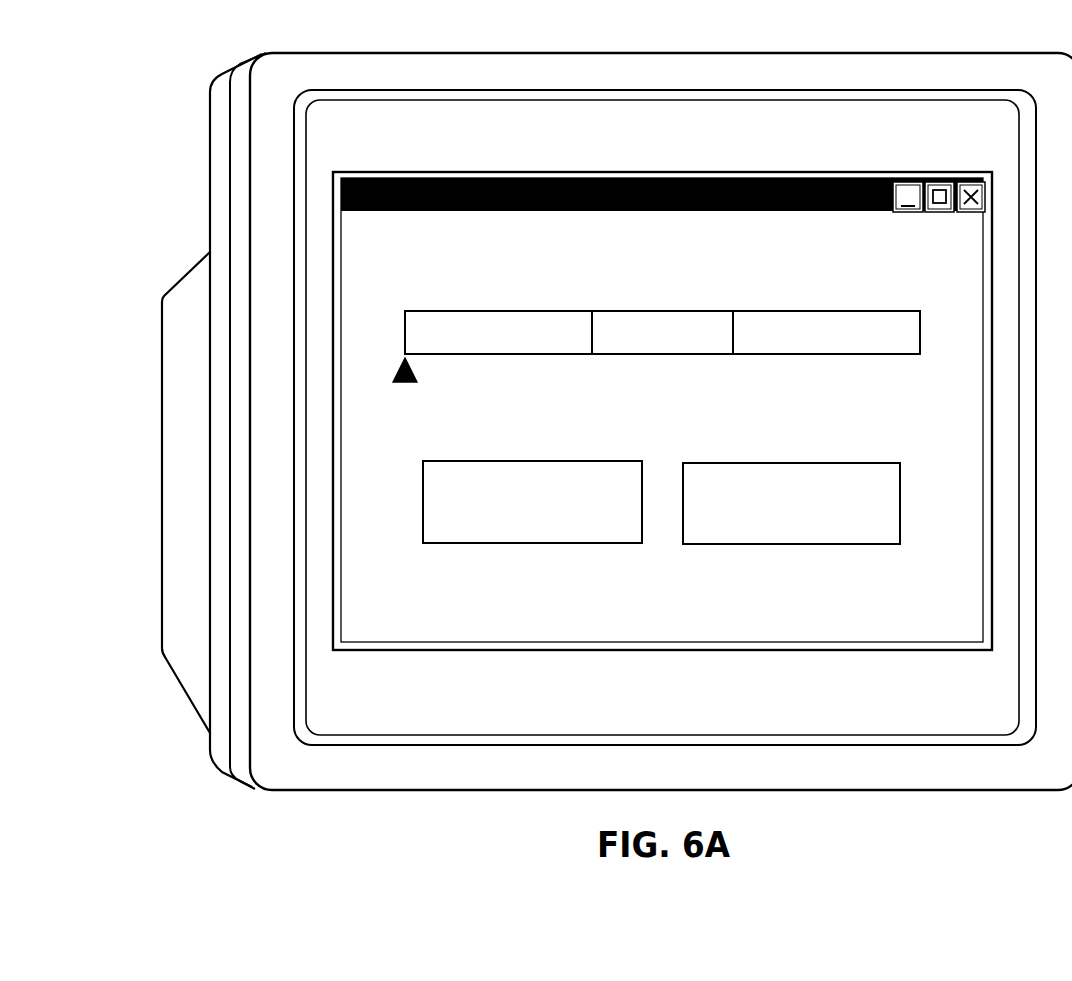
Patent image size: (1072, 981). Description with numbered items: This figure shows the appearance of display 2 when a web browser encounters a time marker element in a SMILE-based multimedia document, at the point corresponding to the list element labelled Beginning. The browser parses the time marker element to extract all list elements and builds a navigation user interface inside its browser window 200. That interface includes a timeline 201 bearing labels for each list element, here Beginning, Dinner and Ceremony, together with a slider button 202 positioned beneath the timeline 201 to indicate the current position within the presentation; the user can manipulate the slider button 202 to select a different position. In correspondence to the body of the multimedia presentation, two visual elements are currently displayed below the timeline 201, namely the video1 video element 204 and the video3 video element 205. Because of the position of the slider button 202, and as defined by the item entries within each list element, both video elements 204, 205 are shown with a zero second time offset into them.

The display 2 is at (664, 54).
The browser window 200 is at (668, 172).
The timeline 201 is at (836, 311).
The slider button 202 is at (416, 372).
The VIDEO1 clip box 204 is at (523, 543).
The VIDEO3 clip box 205 is at (770, 544).